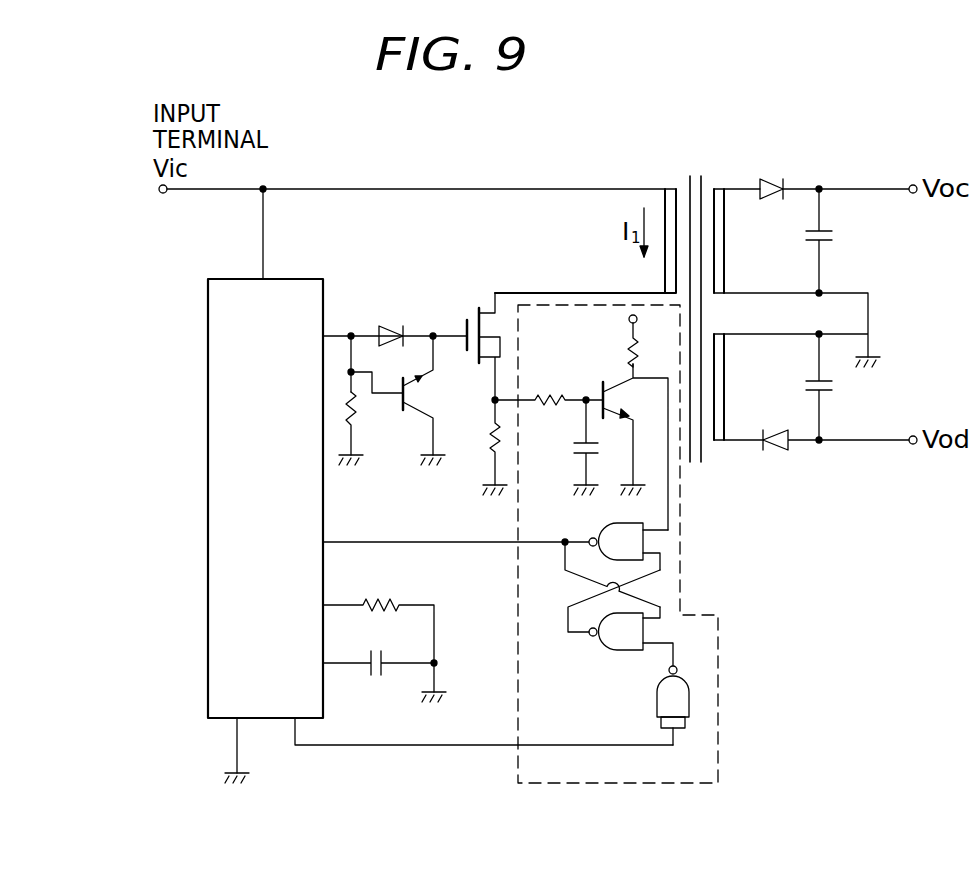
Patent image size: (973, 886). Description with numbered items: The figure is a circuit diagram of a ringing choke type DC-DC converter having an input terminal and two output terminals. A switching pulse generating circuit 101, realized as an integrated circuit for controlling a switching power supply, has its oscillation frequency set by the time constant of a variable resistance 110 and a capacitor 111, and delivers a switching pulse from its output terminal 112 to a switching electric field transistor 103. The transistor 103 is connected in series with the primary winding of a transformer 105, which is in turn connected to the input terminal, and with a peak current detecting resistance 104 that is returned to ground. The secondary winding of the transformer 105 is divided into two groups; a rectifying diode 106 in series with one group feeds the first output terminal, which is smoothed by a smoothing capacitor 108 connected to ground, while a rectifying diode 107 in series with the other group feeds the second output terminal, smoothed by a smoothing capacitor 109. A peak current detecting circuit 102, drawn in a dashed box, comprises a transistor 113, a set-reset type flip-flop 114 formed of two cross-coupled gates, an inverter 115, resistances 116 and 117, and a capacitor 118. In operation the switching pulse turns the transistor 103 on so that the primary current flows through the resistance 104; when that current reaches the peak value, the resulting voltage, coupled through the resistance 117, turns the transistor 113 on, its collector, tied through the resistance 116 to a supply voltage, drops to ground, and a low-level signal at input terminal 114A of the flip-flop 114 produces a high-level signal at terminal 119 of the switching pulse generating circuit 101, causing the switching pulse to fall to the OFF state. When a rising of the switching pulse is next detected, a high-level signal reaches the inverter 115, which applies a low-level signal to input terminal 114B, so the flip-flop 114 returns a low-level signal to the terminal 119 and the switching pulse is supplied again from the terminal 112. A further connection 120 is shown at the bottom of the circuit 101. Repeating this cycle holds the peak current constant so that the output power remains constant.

The switching pulse generating circuit 101 is at (213, 546).
The peak current detecting circuit 102 is at (680, 562).
The switching electric field transistor 103 is at (478, 312).
The peak current detecting resistance 104 is at (483, 437).
The transformer 105 is at (702, 175).
The rectifying diode 106 is at (772, 200).
The rectifying diode 107 is at (792, 450).
The smoothing capacitor 108 is at (835, 236).
The smoothing capacitor 109 is at (837, 393).
The variable resistance 110 is at (380, 598).
The capacitor 111 is at (376, 680).
The output terminal 112 is at (328, 333).
The transistor 113 is at (622, 400).
The set-reset type flip-flop 114 is at (654, 576).
The input terminal of the flip-flop 114A is at (650, 522).
The input terminal of the flip-flop 114B is at (650, 632).
The inverter 115 is at (692, 700).
The resistance 116 is at (625, 342).
The resistance 117 is at (545, 390).
The capacitor 118 is at (573, 446).
The terminal of the switching pulse generating circuit 119 is at (330, 538).
The shutdown input terminal 120 is at (290, 727).